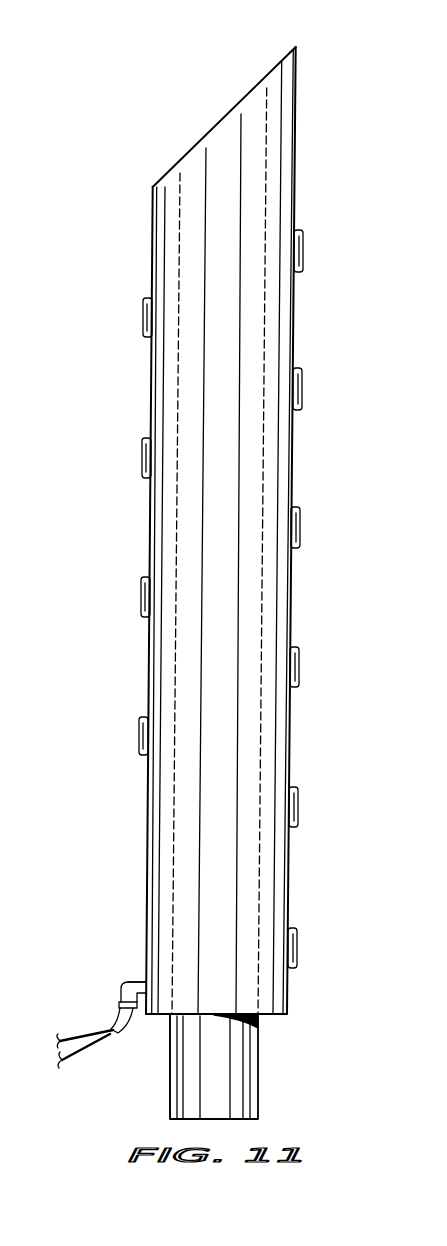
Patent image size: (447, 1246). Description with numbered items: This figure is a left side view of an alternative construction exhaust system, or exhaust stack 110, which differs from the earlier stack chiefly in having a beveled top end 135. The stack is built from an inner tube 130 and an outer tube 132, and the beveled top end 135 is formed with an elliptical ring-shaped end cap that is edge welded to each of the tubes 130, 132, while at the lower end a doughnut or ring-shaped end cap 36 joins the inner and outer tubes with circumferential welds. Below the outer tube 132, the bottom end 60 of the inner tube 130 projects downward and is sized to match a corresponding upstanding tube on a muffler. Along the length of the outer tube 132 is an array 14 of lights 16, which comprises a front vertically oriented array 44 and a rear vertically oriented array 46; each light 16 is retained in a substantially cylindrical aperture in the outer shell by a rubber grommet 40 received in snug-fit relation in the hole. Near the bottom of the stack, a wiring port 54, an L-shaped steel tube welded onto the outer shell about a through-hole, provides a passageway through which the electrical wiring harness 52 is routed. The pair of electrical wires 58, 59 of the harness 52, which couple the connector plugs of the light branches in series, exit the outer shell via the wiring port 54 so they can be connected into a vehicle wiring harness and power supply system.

The exhaust stack 110 is at (100, 115).
The array of lights 14 is at (143, 163).
The beveled top end 135 is at (252, 72).
The outer tube 132 is at (297, 137).
The end cap 36 is at (285, 1017).
The light 16 is at (303, 245).
The rubber grommet 40 is at (302, 268).
The rear vertically oriented array 46 is at (138, 568).
The front vertically oriented array 44 is at (305, 650).
The inner tube 130 is at (250, 1088).
The bottom end 60 is at (168, 1097).
The wiring harness 52 is at (118, 1020).
The wiring port 54 is at (122, 982).
The electrical wire 58 is at (72, 1038).
The electrical wire 59 is at (66, 1062).